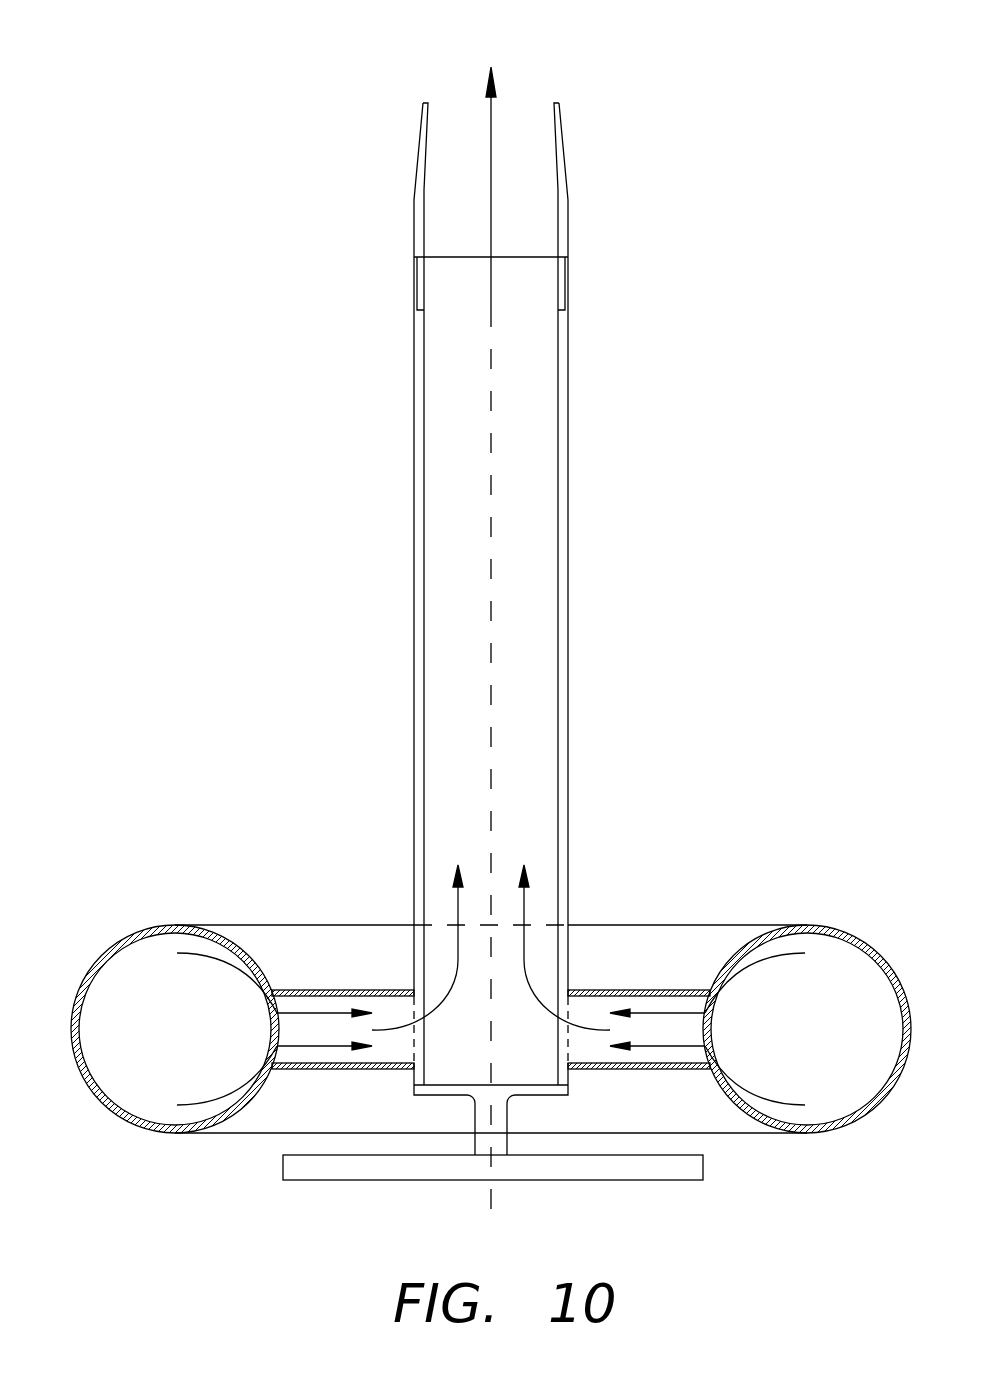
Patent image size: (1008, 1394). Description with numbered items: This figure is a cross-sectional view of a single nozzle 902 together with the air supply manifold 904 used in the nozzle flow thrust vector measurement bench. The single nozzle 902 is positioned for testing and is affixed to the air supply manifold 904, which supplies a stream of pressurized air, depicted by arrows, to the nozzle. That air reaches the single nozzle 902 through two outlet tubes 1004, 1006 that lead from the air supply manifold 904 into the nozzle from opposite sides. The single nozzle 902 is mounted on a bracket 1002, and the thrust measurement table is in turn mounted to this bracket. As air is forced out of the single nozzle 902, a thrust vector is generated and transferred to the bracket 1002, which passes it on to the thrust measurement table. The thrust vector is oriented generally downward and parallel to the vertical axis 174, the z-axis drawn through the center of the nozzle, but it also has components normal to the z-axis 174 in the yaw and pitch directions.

The vertical axis 174 is at (491, 28).
The single nozzle 902 is at (568, 373).
The air supply manifold 904 is at (882, 952).
The bracket 1002 is at (703, 1160).
The outlet tube 1004 is at (345, 990).
The outlet tube 1006 is at (636, 990).